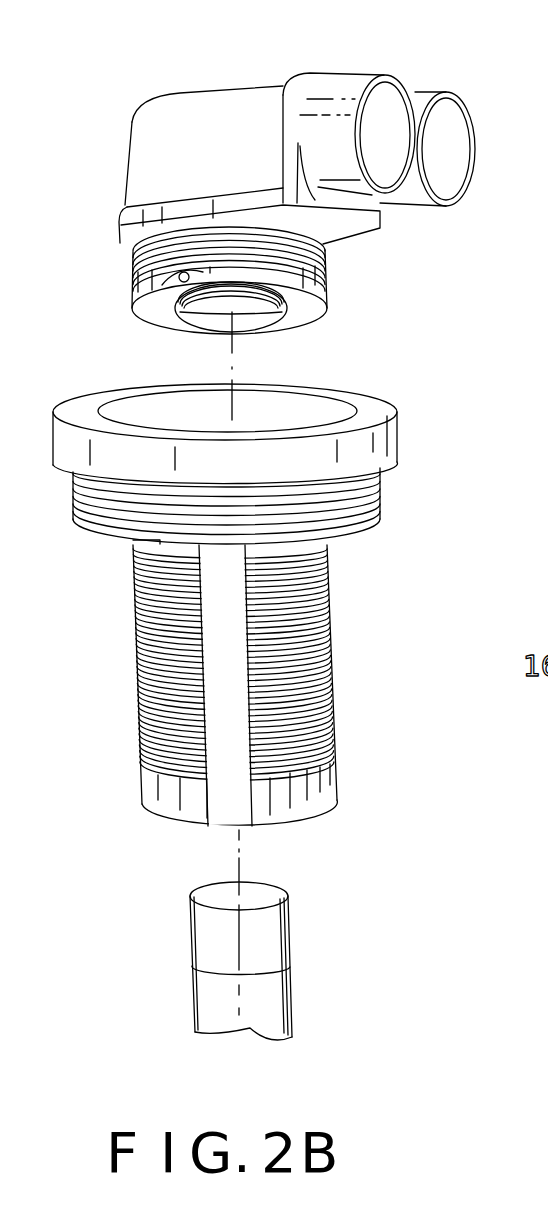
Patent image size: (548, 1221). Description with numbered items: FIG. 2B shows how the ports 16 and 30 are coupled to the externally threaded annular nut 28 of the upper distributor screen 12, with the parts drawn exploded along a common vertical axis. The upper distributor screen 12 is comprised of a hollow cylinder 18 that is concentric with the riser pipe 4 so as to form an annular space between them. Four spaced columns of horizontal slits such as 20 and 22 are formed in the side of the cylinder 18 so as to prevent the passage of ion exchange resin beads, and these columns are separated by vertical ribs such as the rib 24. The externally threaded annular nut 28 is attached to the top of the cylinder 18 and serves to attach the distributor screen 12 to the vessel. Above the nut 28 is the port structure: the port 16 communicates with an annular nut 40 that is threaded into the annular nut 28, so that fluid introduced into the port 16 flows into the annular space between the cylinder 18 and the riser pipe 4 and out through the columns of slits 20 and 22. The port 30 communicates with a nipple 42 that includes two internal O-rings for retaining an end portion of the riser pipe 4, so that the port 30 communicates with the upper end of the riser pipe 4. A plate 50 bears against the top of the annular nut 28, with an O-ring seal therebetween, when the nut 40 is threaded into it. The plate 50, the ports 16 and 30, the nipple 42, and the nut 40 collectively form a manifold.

The riser pipe 4 is at (277, 937).
The upper distributor screen 12 is at (235, 681).
The port 16 is at (382, 100).
The hollow cylinder 18 is at (150, 703).
The column of horizontal slits 20 is at (147, 600).
The column of horizontal slits 22 is at (333, 678).
The vertical rib 24 is at (240, 815).
The externally threaded annular nut 28 is at (398, 423).
The port 30 is at (447, 120).
The annular nut 40 is at (328, 255).
The nipple 42 is at (288, 327).
The plate 50 is at (121, 215).